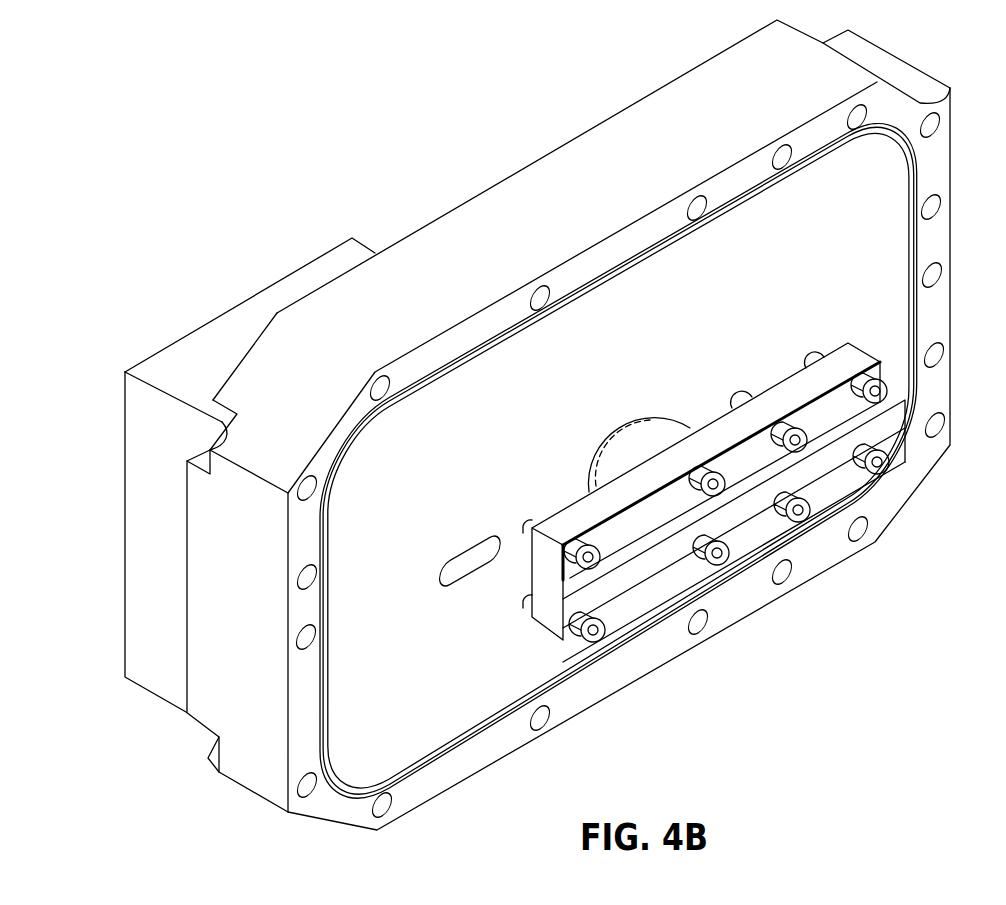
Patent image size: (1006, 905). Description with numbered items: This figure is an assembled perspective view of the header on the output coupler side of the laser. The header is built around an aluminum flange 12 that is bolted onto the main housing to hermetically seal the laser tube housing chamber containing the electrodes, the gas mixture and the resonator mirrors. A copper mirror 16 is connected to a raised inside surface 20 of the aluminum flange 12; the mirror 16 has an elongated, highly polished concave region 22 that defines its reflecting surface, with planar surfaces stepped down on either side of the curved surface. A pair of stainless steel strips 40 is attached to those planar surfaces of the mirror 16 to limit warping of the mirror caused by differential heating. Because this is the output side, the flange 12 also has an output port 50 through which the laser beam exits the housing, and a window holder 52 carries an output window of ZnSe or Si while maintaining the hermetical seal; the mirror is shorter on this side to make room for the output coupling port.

The aluminum flange 12 is at (475, 223).
The copper mirror 16 is at (552, 605).
The raised inside surface 20 is at (642, 427).
The concave region 22 is at (883, 437).
The stainless steel strips 40 is at (837, 403).
The output port 50 is at (453, 577).
The window holder 52 is at (225, 337).